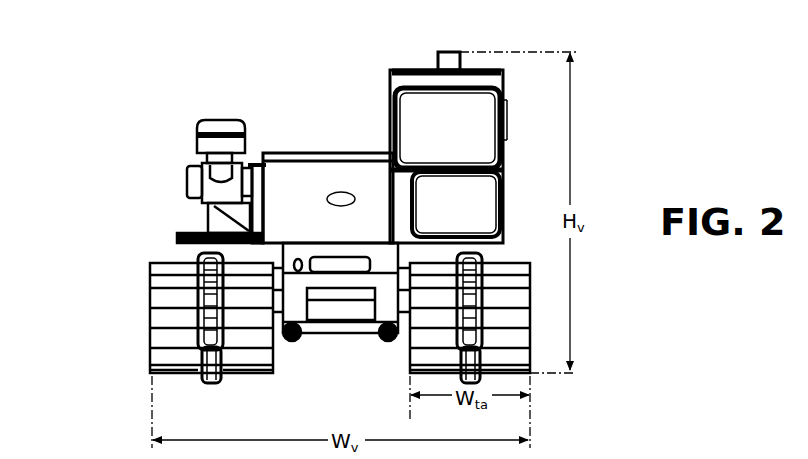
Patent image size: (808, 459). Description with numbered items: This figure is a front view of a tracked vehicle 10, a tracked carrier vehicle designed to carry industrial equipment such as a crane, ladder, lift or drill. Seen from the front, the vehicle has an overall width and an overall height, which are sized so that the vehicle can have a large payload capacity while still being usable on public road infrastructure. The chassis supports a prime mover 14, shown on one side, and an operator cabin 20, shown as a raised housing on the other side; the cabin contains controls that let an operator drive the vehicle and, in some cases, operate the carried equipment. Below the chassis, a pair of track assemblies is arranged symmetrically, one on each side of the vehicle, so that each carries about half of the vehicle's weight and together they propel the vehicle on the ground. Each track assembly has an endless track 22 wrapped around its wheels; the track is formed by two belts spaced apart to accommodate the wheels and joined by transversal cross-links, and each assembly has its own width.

The tracked vehicle 10 is at (594, 103).
The prime mover 14 is at (196, 218).
The operator cabin 20 is at (512, 123).
The endless track 22 is at (163, 343).